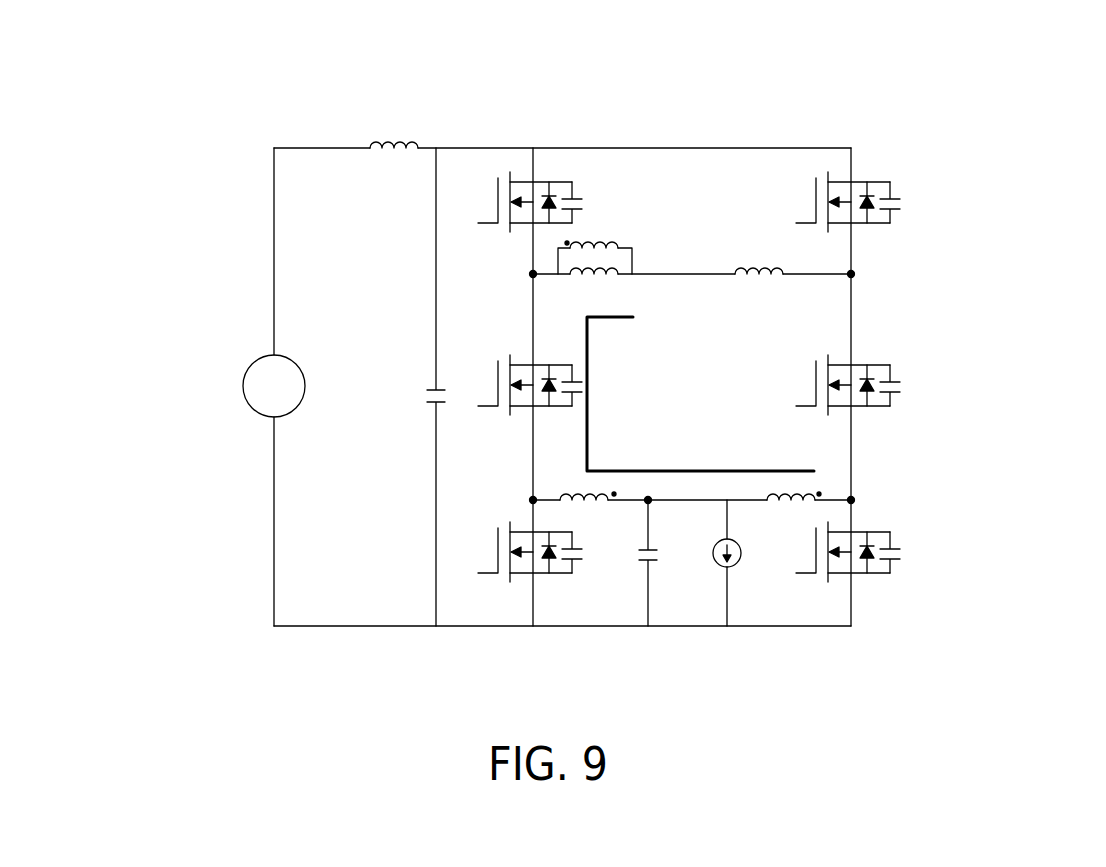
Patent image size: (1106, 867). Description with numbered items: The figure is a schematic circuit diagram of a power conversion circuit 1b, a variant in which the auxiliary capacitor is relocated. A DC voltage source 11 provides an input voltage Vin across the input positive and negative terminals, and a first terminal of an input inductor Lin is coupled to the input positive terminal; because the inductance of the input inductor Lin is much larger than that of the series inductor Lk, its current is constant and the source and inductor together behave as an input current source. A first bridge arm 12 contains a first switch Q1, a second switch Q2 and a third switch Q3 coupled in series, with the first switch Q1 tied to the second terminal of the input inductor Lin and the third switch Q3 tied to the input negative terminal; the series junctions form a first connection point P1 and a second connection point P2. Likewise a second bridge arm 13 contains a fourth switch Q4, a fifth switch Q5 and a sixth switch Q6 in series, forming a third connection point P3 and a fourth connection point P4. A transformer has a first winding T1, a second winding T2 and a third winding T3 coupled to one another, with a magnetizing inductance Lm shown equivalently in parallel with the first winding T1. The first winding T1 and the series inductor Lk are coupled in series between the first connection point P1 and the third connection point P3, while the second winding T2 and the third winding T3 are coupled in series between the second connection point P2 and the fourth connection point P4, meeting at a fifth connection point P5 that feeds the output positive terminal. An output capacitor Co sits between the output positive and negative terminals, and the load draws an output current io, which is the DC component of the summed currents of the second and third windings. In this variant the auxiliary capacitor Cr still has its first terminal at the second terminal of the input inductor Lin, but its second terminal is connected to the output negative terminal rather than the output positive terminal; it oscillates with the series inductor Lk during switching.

The power conversion circuit 1b is at (1088, 73).
The DC voltage source 11 is at (237, 362).
The first bridge arm 12 is at (518, 135).
The second bridge arm 13 is at (860, 130).
The input inductor Lin is at (394, 127).
The auxiliary capacitor Cr is at (419, 387).
The first switch Q1 is at (521, 202).
The second switch Q2 is at (514, 385).
The third switch Q3 is at (517, 552).
The fourth switch Q4 is at (870, 200).
The fifth switch Q5 is at (872, 385).
The sixth switch Q6 is at (867, 552).
The first winding T1 is at (595, 242).
The second winding T2 is at (588, 514).
The third winding T3 is at (794, 514).
The magnetizing inductance Lm is at (597, 289).
The series inductor Lk is at (759, 253).
The output capacitor Co is at (668, 563).
The output current io is at (740, 563).
The input voltage Vin is at (274, 386).
The first connection point P1 is at (517, 279).
The second connection point P2 is at (514, 501).
The third connection point P3 is at (870, 279).
The fourth connection point P4 is at (868, 501).
The fifth connection point P5 is at (665, 516).